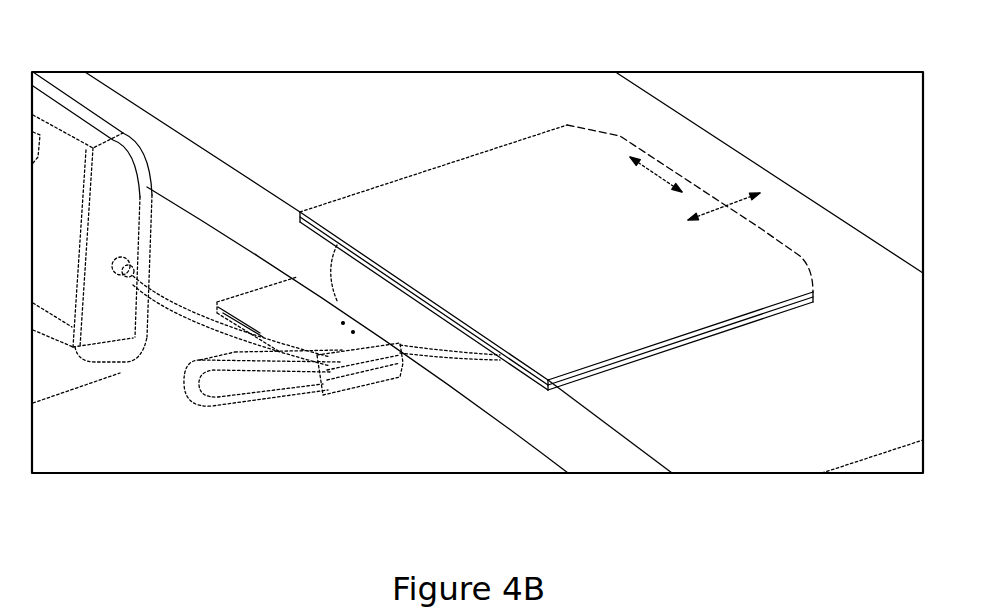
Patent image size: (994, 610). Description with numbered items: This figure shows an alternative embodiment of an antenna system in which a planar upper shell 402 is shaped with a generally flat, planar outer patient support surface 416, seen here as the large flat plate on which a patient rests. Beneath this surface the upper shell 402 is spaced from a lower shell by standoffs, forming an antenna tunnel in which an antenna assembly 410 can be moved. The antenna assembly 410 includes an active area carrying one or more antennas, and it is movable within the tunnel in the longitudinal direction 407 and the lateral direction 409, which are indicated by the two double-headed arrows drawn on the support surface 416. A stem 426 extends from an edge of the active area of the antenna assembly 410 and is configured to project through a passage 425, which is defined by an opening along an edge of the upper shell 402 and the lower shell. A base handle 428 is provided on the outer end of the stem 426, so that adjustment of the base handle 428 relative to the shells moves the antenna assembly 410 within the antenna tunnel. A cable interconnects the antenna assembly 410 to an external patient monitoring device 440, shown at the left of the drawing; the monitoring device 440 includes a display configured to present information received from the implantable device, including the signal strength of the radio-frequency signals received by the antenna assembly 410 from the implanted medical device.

The upper shell 402 is at (414, 186).
The longitudinal direction 407 is at (718, 207).
The lateral direction 409 is at (655, 175).
The antenna assembly 410 is at (284, 410).
The outer patient support surface 416 is at (588, 251).
The passage 425 is at (304, 238).
The stem 426 is at (481, 380).
The base handle 428 is at (364, 392).
The external patient monitoring device 440 is at (123, 373).